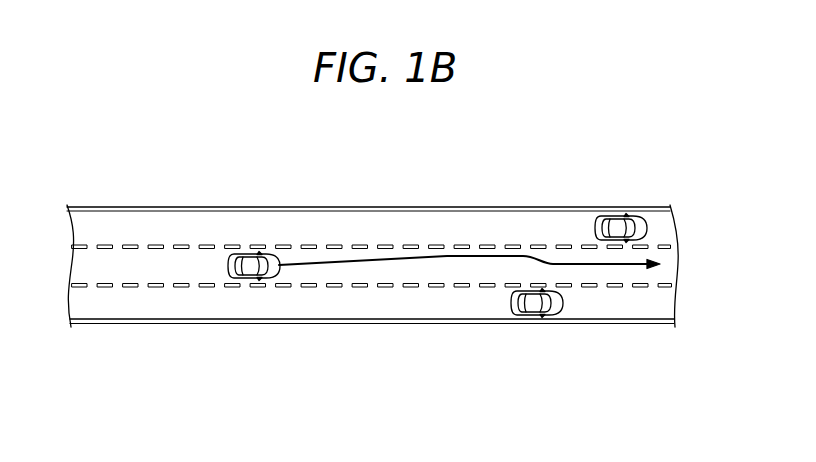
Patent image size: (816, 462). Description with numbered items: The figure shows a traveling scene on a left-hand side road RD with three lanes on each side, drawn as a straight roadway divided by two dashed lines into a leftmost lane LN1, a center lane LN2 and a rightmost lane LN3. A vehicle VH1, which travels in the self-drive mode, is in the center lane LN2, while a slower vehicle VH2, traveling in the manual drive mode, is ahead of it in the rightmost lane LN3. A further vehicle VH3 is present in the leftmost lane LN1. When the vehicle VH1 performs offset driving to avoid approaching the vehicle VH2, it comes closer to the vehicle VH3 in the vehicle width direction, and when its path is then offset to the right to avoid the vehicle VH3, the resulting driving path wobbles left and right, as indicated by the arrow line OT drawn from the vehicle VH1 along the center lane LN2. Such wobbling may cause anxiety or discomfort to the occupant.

The road RD is at (102, 206).
The leftmost lane LN1 is at (660, 227).
The center lane LN2 is at (665, 268).
The rightmost lane LN3 is at (660, 310).
The arrow line OT is at (398, 257).
The vehicle VH1 is at (248, 279).
The vehicle VH2 is at (532, 317).
The vehicle VH3 is at (622, 215).